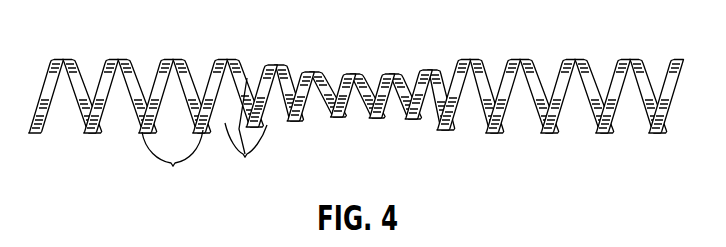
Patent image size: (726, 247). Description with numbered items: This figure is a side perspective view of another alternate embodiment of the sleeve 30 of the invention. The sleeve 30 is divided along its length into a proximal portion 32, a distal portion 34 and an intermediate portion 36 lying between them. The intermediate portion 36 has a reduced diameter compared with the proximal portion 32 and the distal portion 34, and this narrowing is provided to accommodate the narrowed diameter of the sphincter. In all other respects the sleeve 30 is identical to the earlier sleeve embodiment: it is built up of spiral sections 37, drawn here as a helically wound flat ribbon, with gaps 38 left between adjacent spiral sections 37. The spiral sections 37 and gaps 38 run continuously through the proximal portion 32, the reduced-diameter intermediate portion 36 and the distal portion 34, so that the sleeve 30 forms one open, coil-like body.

The sleeve 30 is at (356, 73).
The proximal portion 32 is at (83, 45).
The distal portion 34 is at (652, 47).
The intermediate portion 36 is at (338, 52).
The spiral sections 37 is at (172, 158).
The gaps 38 is at (246, 131).